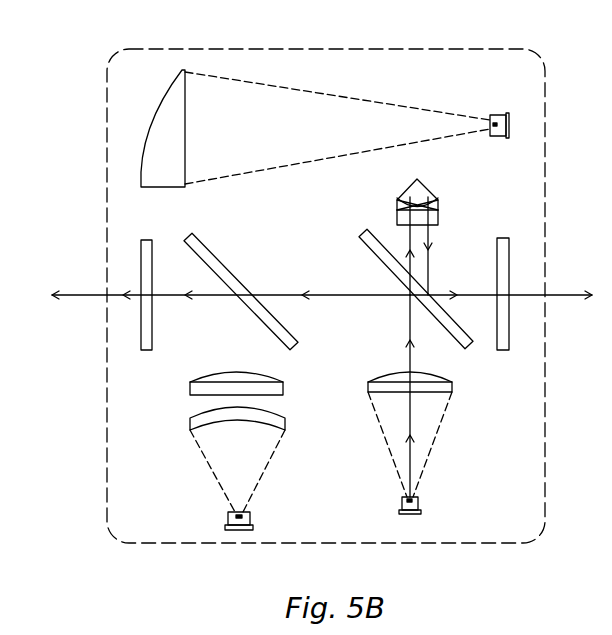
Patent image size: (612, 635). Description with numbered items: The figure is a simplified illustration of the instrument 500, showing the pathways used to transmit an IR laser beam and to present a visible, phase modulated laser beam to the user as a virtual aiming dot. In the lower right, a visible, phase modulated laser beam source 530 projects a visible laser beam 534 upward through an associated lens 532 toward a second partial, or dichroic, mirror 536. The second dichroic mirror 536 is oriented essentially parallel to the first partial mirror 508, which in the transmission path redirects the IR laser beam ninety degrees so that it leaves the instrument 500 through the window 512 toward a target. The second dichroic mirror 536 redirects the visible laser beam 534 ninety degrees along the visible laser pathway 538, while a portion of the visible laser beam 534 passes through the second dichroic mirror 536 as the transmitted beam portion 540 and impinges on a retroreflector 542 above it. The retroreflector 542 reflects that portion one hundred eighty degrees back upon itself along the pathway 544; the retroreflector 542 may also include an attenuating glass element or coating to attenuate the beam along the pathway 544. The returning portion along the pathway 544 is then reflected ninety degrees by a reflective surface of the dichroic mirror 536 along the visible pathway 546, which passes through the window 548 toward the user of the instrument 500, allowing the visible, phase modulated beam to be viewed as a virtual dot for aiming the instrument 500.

The instrument 500 is at (467, 49).
The first partial mirror 508 is at (212, 252).
The window 512 is at (143, 240).
The visible phase modulated laser beam source 530 is at (422, 505).
The lens 532 is at (453, 388).
The visible laser beam 534 is at (409, 355).
The second partial mirror 536 is at (362, 256).
The visible laser pathway 538 is at (283, 295).
The transmitted light beam 540 is at (409, 240).
The retroreflector 542 is at (425, 192).
The pathway 544 is at (429, 272).
The visible pathway 546 is at (556, 295).
The window 548 is at (501, 238).